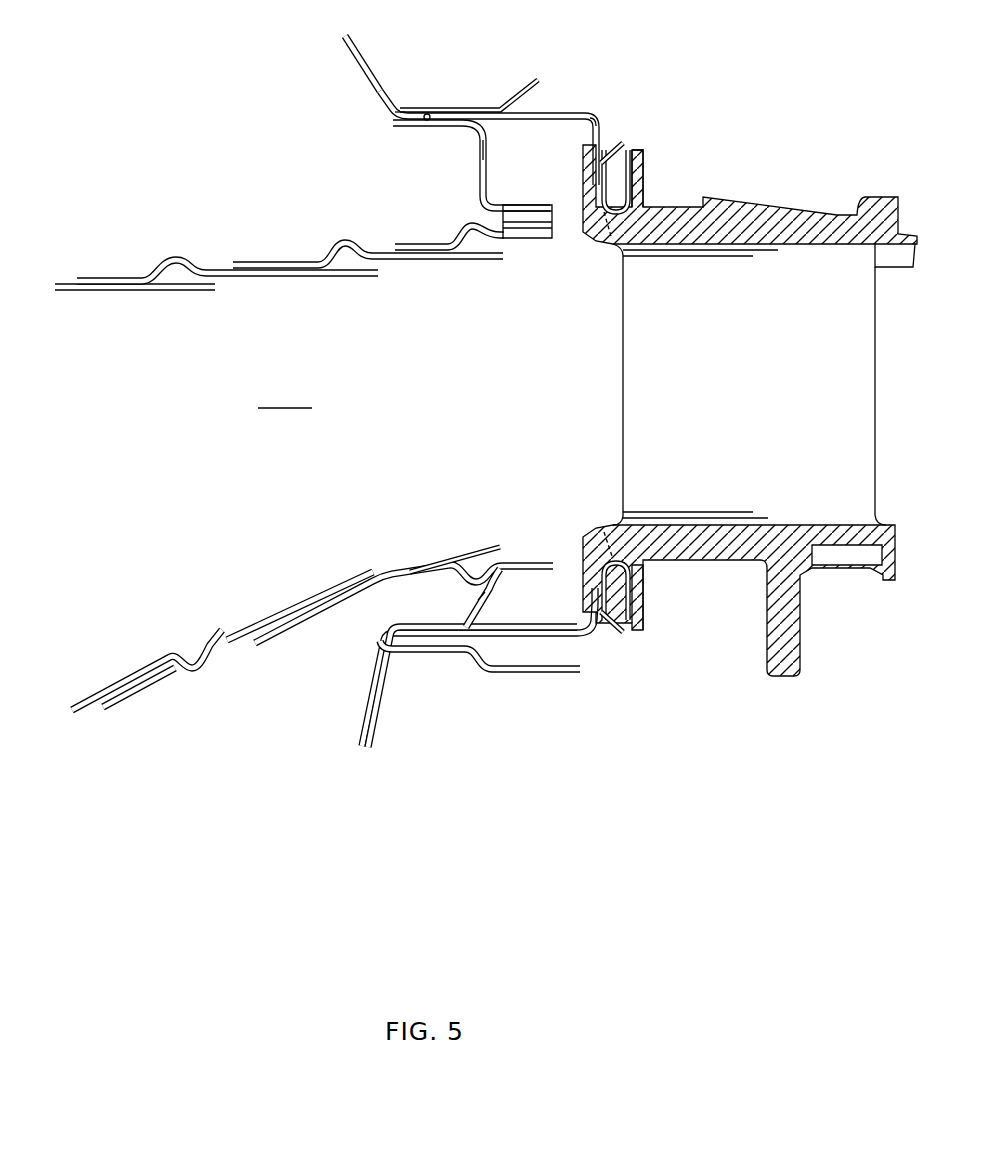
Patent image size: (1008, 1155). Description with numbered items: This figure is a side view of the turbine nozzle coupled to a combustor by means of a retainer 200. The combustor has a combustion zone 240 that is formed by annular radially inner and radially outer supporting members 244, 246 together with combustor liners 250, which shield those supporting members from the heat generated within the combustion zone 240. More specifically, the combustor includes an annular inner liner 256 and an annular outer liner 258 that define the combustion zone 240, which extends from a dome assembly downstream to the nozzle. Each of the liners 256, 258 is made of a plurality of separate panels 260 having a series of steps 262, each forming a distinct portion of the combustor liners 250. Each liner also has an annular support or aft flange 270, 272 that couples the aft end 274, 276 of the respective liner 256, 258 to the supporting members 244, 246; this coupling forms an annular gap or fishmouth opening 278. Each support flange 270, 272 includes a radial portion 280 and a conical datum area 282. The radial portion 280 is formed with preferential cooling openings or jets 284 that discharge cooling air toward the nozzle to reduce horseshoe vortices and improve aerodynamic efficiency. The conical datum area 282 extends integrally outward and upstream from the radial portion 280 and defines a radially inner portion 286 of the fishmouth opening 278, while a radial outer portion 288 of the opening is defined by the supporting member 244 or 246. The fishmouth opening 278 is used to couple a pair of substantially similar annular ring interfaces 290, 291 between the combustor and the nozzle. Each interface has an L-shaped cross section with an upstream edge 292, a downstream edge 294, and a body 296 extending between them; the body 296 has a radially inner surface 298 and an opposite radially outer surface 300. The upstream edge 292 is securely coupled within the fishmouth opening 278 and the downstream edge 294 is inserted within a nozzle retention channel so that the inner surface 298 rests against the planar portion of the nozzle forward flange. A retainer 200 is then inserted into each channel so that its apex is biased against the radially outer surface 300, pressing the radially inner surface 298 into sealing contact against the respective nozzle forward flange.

The retainer 200 is at (628, 147).
The combustion zone 240 is at (285, 394).
The radially inner supporting member 244 is at (490, 670).
The radially outer supporting member 246 is at (400, 112).
The combustor liners 250 is at (378, 284).
The annular inner liner 256 is at (203, 632).
The annular outer liner 258 is at (160, 291).
The panels 260 is at (128, 280).
The steps 262 is at (236, 289).
The support flange 270 is at (492, 598).
The support flange 272 is at (480, 157).
The aft end 274 is at (541, 560).
The aft end 276 is at (527, 247).
The fishmouth opening 278 is at (388, 115).
The radial portion 280 is at (518, 203).
The conical datum area 282 is at (490, 152).
The preferential cooling openings 284 is at (503, 224).
The radially inner portion 286 is at (417, 118).
The radial outer portion 288 is at (414, 117).
The annular ring interface 290 is at (598, 134).
The annular ring interface 291 is at (497, 643).
The upstream edge 292 is at (440, 112).
The downstream edge 294 is at (606, 162).
The body 296 is at (598, 122).
The radially inner surface 298 is at (603, 145).
The radially outer surface 300 is at (594, 110).